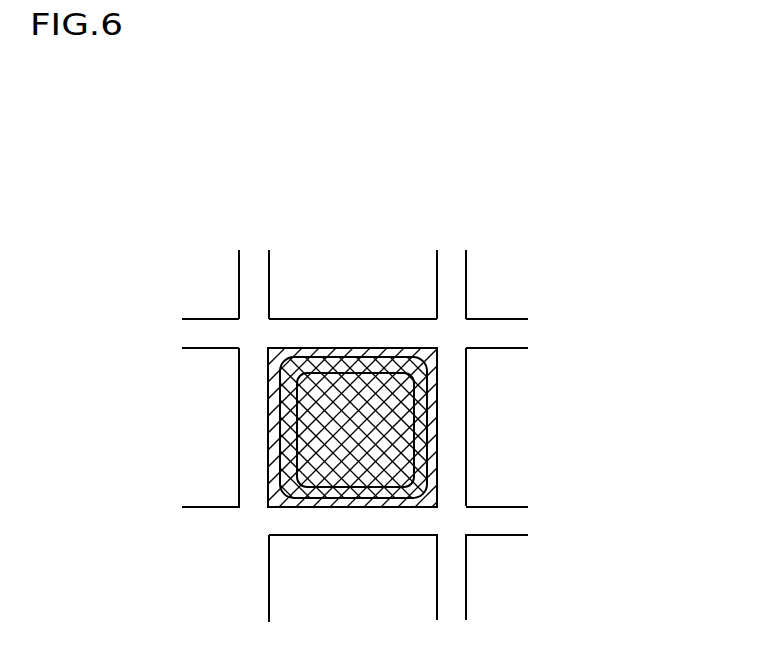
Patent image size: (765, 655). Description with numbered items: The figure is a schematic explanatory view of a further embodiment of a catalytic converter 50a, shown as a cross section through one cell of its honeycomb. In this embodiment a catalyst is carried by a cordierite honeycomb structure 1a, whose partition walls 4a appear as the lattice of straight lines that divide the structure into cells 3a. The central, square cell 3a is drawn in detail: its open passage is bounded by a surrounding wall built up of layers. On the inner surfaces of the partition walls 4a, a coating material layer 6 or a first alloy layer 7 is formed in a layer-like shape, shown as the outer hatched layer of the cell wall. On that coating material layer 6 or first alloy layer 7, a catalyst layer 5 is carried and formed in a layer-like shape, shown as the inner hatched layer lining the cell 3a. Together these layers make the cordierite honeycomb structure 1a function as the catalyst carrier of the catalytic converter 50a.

The catalytic converter 50a is at (393, 222).
The cordierite honeycomb structure 1a is at (360, 386).
The partition walls 4a is at (243, 440).
The coating material layer 6 is at (276, 348).
The first alloy layer 7 is at (350, 349).
The catalyst layer 5 is at (370, 362).
The cells 3a is at (377, 435).